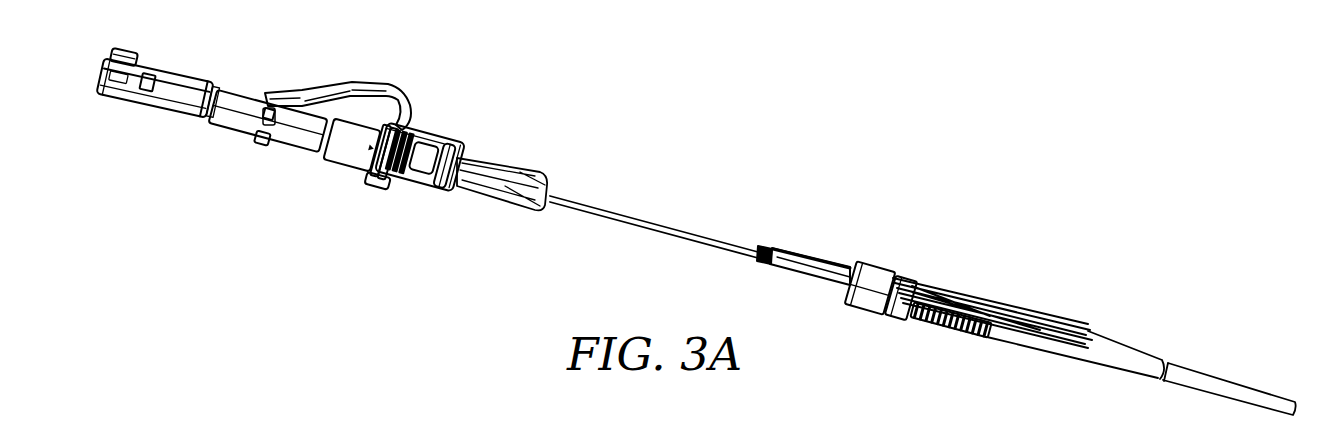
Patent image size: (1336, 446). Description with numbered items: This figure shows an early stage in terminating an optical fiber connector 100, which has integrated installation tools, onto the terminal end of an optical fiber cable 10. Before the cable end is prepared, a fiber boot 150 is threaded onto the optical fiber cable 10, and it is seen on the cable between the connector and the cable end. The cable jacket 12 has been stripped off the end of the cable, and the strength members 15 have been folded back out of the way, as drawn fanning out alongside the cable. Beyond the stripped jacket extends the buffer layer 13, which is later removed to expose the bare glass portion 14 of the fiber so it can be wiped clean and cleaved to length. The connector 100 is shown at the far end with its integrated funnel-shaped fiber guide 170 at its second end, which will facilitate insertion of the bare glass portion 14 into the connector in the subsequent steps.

The optical fiber cable 10 is at (1274, 368).
The cable jacket 12 is at (1208, 382).
The buffer layer 13 is at (630, 215).
The bare glass portion 14 is at (483, 178).
The strength members 15 is at (1023, 325).
The optical fiber connector 100 is at (342, 205).
The fiber boot 150 is at (935, 352).
The funnel-shaped fiber guide 170 is at (465, 216).